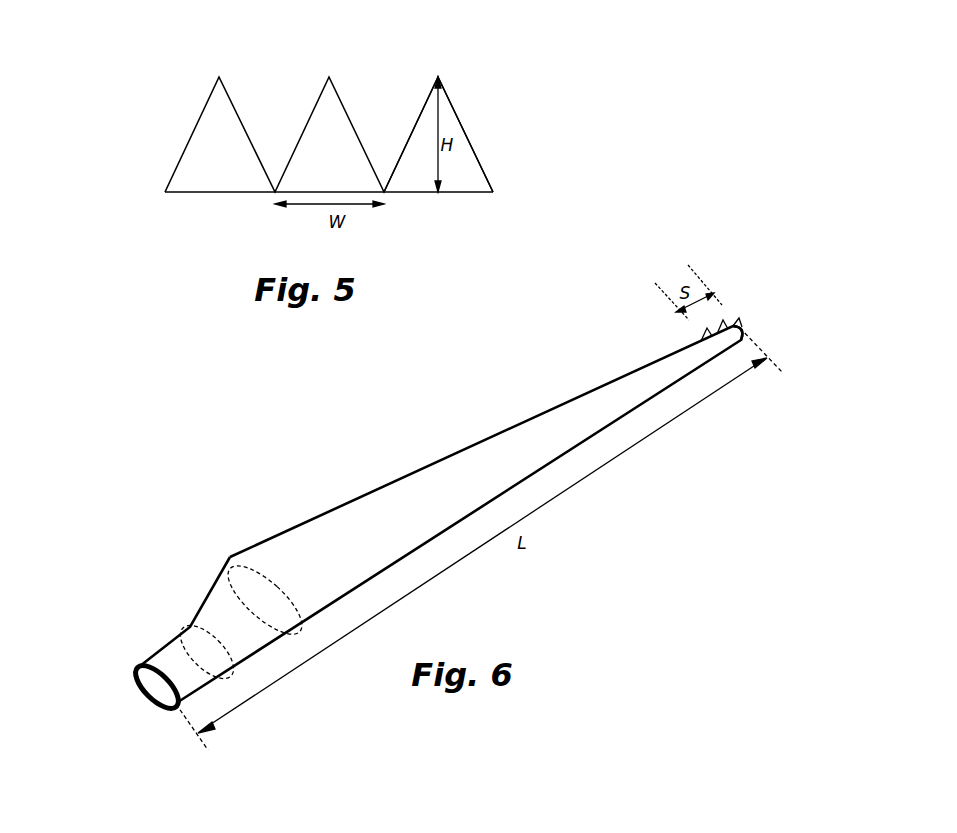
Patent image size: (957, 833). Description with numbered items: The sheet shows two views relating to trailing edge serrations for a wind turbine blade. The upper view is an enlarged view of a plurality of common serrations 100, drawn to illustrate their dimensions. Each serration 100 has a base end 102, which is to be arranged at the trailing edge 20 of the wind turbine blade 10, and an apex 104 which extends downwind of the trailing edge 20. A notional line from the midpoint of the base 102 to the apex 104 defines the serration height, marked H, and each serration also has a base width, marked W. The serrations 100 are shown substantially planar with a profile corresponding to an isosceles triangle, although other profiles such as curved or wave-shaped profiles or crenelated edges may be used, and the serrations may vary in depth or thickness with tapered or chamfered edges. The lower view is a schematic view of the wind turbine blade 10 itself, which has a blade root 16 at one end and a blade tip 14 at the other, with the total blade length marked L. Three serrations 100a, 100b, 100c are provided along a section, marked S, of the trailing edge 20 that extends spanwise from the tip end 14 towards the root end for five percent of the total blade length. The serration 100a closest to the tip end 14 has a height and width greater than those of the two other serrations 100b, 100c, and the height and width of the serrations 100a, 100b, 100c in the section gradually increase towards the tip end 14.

In FIG. 6, the wind turbine blade 10 is at (426, 483).
In FIG. 6, the blade tip 14 is at (745, 329).
In FIG. 6, the blade root 16 is at (133, 680).
In FIG. 6, the trailing edge 20 is at (499, 477).
In FIG. 5, the serrations 100 is at (187, 74).
In FIG. 5, the base end 102 is at (466, 197).
In FIG. 5, the apex 104 is at (445, 69).
In FIG. 6, the serration 100a is at (735, 320).
In FIG. 6, the serration 100b is at (715, 322).
In FIG. 6, the serration 100c is at (705, 330).